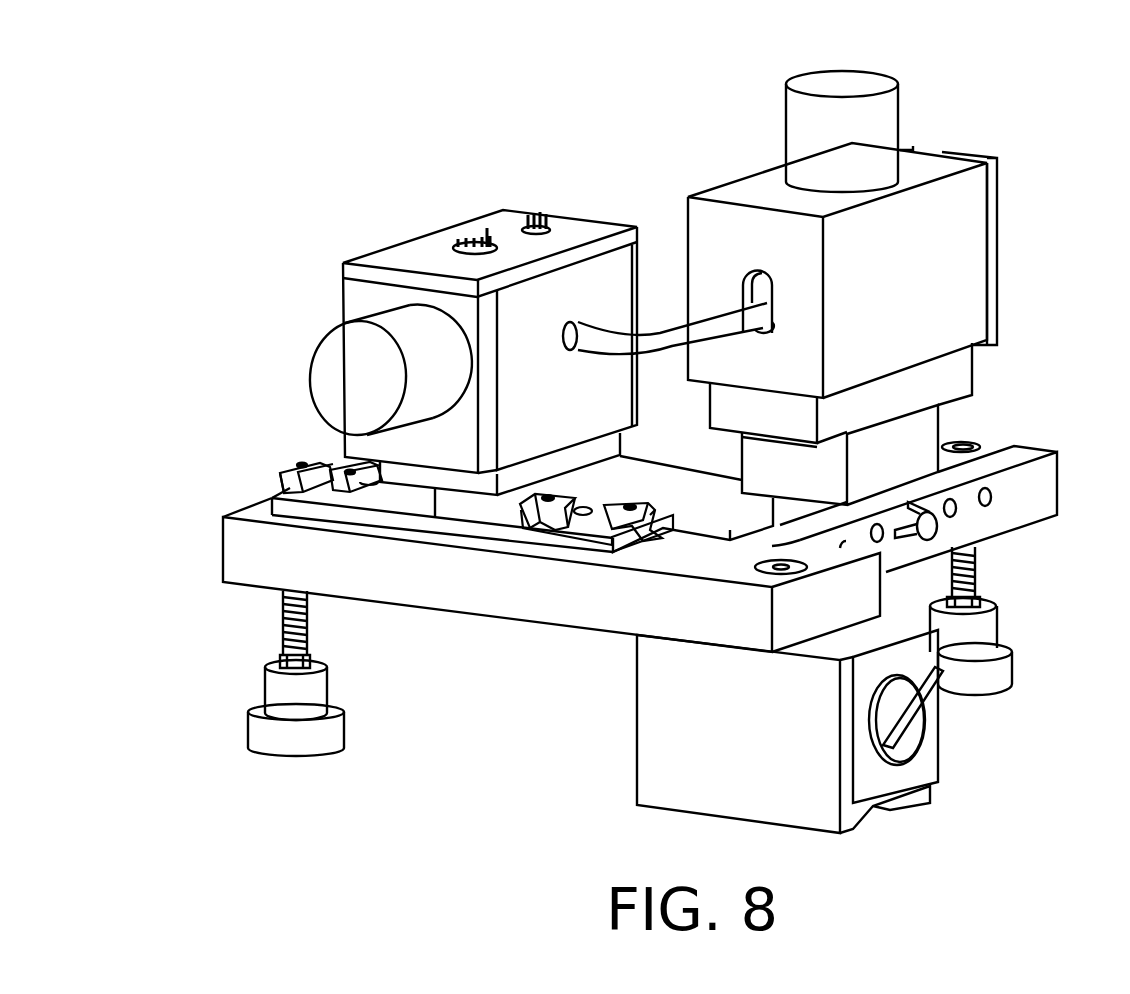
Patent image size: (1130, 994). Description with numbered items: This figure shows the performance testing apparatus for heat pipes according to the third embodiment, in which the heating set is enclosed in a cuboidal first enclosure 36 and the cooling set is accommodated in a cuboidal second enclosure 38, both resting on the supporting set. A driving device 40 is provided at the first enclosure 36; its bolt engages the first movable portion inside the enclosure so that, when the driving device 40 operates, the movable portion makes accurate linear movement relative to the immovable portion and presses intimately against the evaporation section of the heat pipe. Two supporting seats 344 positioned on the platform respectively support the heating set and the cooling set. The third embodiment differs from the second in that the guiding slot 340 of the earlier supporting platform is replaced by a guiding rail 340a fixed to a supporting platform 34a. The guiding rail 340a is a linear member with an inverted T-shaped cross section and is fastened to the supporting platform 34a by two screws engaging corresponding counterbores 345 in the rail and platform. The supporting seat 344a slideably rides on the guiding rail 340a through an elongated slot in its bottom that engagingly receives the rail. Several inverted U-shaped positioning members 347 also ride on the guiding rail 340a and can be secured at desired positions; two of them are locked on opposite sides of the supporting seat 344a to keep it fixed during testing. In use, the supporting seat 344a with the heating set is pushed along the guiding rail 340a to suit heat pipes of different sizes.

The first enclosure 36 is at (418, 255).
The second enclosure 38 is at (903, 290).
The driving device 40 is at (327, 380).
The guiding slot 340 is at (958, 463).
The guiding rail 340a is at (316, 488).
The supporting platform 34a is at (277, 563).
The supporting seat 344 is at (950, 383).
The supporting seat 344a is at (473, 480).
The positioning member 347 is at (292, 470).
The counterbore 345 is at (583, 516).